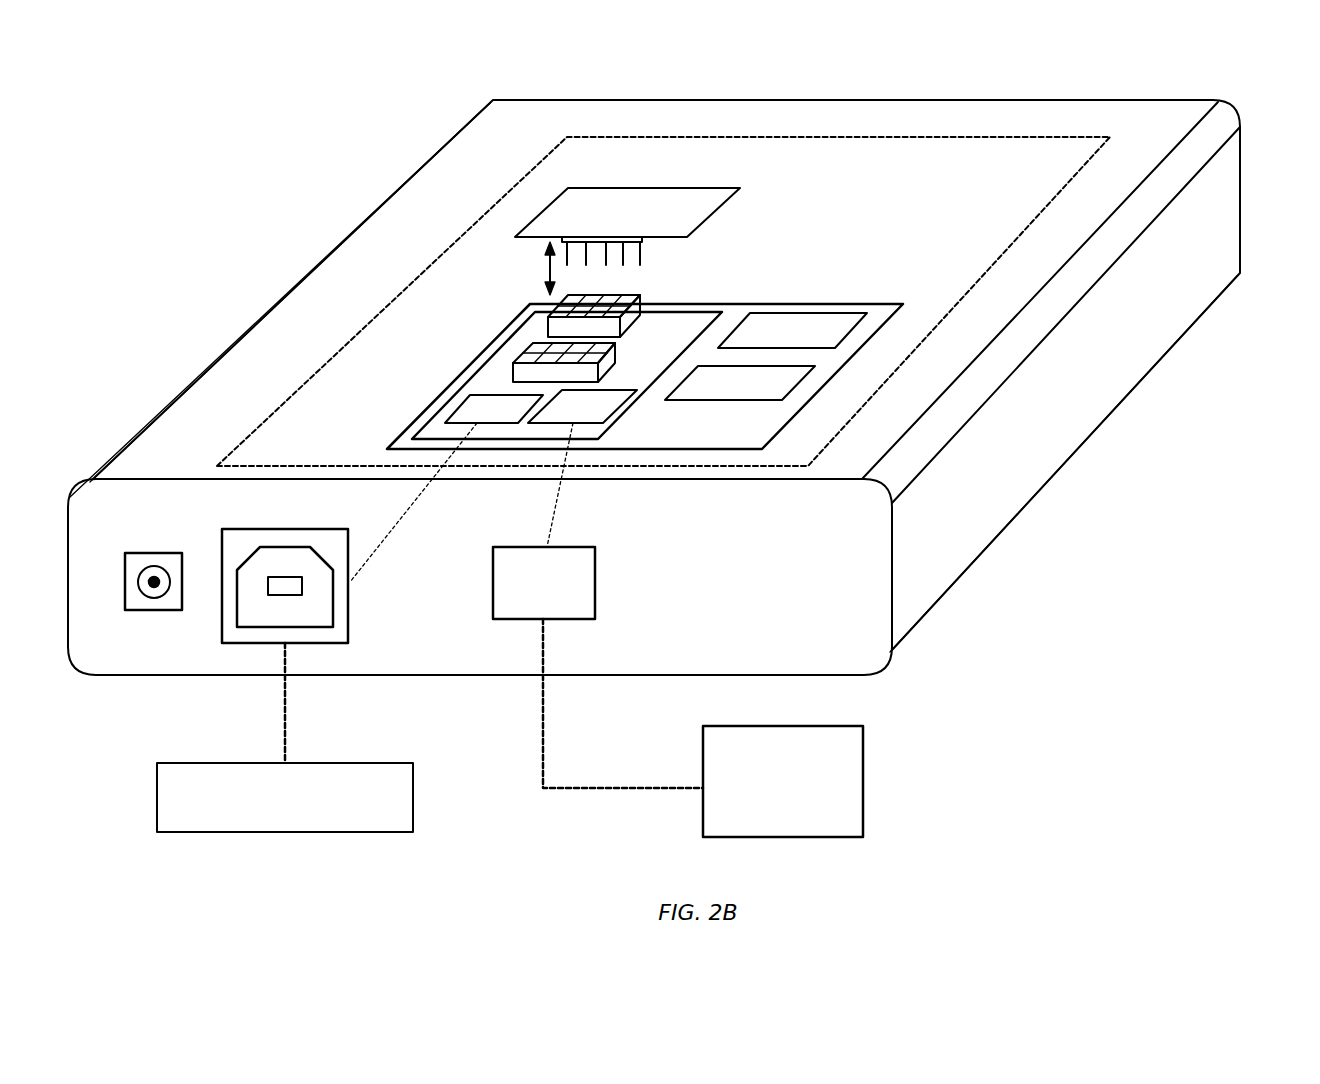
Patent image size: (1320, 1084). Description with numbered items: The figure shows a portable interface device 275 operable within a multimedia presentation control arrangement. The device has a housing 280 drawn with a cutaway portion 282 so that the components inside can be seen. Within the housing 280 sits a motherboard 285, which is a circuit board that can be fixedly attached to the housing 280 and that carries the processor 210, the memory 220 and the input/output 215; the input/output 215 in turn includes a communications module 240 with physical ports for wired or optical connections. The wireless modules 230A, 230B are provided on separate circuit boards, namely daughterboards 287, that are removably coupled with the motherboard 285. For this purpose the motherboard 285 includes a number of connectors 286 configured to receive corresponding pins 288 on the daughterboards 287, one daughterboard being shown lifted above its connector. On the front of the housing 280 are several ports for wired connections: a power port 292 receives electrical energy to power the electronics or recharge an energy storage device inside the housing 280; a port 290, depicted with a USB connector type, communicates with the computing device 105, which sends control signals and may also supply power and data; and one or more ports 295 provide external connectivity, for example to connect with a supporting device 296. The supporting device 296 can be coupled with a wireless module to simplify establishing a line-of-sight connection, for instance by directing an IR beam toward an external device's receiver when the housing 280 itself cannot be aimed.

The portable interface device 275 is at (694, 387).
The housing 280 is at (1240, 208).
The cutaway portion 282 is at (810, 137).
The motherboard 285 is at (845, 303).
The input/output 215 is at (633, 402).
The processor 210 is at (792, 330).
The memory 220 is at (740, 383).
The communications module 240 is at (446, 488).
The wireless module 230A is at (718, 169).
The wireless module 230B is at (582, 468).
The daughterboard 287 is at (640, 198).
The pins 288 is at (640, 252).
The connector 286 is at (548, 323).
The port 290 is at (348, 602).
The power port 292 is at (154, 610).
The port 295 is at (595, 583).
The supporting device 296 is at (863, 803).
The computing device 105 is at (285, 797).